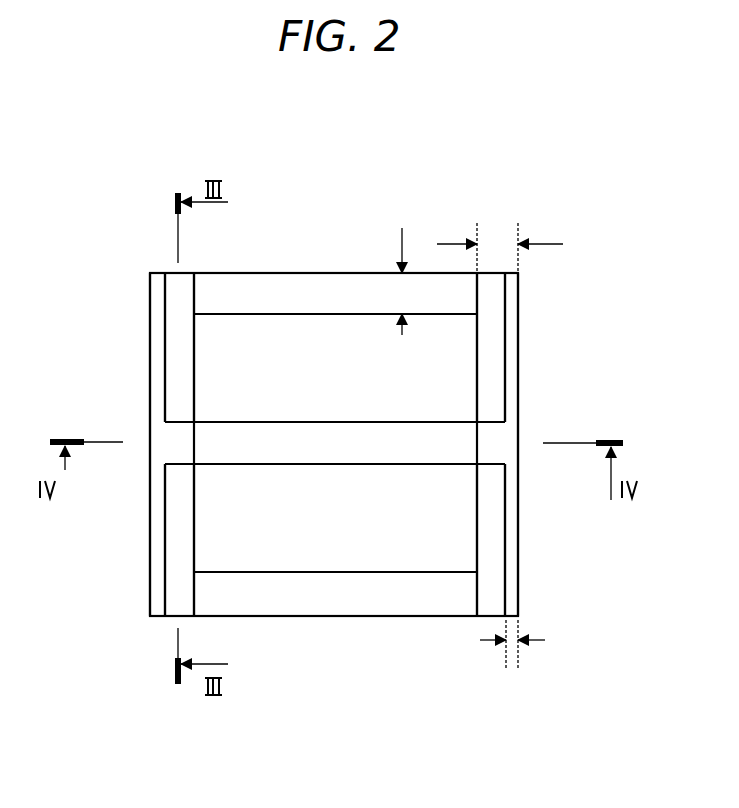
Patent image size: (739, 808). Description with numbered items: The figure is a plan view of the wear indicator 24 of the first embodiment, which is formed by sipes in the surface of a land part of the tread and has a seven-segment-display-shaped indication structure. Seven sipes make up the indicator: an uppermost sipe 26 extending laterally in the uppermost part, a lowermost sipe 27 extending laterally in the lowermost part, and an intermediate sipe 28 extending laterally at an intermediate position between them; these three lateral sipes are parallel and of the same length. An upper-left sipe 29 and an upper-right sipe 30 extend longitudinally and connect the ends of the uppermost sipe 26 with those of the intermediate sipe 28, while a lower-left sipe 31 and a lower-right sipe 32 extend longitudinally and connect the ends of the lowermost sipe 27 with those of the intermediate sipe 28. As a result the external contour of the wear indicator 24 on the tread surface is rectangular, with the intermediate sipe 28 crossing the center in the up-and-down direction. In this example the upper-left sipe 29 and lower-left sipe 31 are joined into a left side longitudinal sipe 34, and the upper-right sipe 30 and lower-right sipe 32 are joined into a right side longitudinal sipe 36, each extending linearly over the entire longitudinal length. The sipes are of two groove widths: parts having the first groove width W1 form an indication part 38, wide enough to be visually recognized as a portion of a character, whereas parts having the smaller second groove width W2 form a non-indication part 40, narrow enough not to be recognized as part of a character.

The wear indicator 24 is at (322, 152).
The uppermost sipe 26 is at (253, 290).
The lowermost sipe 27 is at (311, 597).
The intermediate sipe 28 is at (340, 452).
The upper-left sipe 29 is at (152, 342).
The upper-right sipe 30 is at (505, 352).
The lower-left sipe 31 is at (151, 543).
The lower-right sipe 32 is at (516, 557).
The left side longitudinal sipe 34 is at (152, 408).
The right side longitudinal sipe 36 is at (520, 403).
The indication part 38 is at (342, 292).
The non-indication part 40 is at (157, 308).
The first groove width W1 is at (403, 295).
The second groove width W2 is at (512, 650).